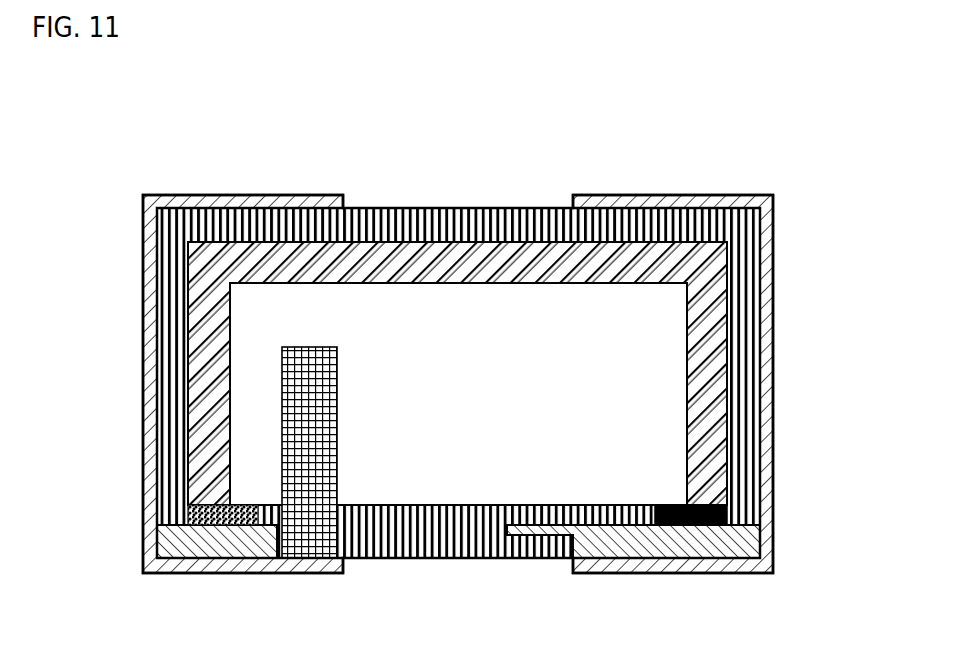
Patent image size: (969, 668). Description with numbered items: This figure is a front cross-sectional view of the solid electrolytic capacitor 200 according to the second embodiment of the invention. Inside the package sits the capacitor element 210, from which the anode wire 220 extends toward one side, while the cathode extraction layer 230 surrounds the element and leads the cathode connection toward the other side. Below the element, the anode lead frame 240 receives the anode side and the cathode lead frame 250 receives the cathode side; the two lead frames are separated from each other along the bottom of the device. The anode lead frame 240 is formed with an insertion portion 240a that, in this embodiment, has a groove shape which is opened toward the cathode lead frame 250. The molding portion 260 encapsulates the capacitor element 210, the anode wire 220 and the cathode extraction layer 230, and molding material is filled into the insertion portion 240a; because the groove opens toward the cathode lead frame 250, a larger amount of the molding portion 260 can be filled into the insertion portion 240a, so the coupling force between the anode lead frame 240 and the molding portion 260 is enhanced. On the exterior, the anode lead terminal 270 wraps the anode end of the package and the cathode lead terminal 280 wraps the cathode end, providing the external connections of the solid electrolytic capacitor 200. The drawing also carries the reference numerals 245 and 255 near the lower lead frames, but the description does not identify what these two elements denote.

The solid electrolytic capacitor 200 is at (735, 167).
The capacitor element 210 is at (410, 310).
The anode wire 220 is at (297, 415).
The cathode extraction layer 230 is at (533, 257).
The anode lead frame 240 is at (248, 550).
The insertion portion 240a is at (280, 533).
The bonding layer 245 is at (213, 527).
The cathode lead frame 250 is at (717, 547).
The conductive layer 255 is at (657, 510).
The molding portion 260 is at (748, 383).
The anode lead terminal 270 is at (143, 293).
The cathode lead terminal 280 is at (767, 292).